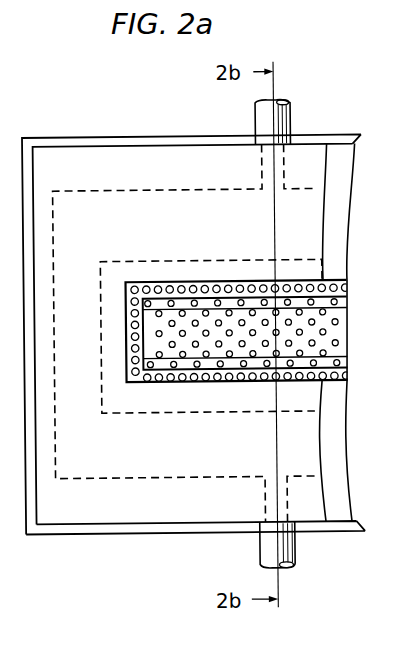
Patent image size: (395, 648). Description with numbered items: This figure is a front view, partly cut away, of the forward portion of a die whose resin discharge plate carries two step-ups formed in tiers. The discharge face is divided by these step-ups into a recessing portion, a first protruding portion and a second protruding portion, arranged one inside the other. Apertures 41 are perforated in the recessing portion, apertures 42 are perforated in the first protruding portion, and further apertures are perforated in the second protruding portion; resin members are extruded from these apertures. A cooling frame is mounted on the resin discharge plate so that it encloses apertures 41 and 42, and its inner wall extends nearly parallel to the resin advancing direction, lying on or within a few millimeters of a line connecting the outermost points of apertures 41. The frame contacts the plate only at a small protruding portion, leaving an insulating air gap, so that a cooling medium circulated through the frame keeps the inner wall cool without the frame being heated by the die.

The apertures 41 is at (272, 286).
The apertures 42 is at (290, 286).